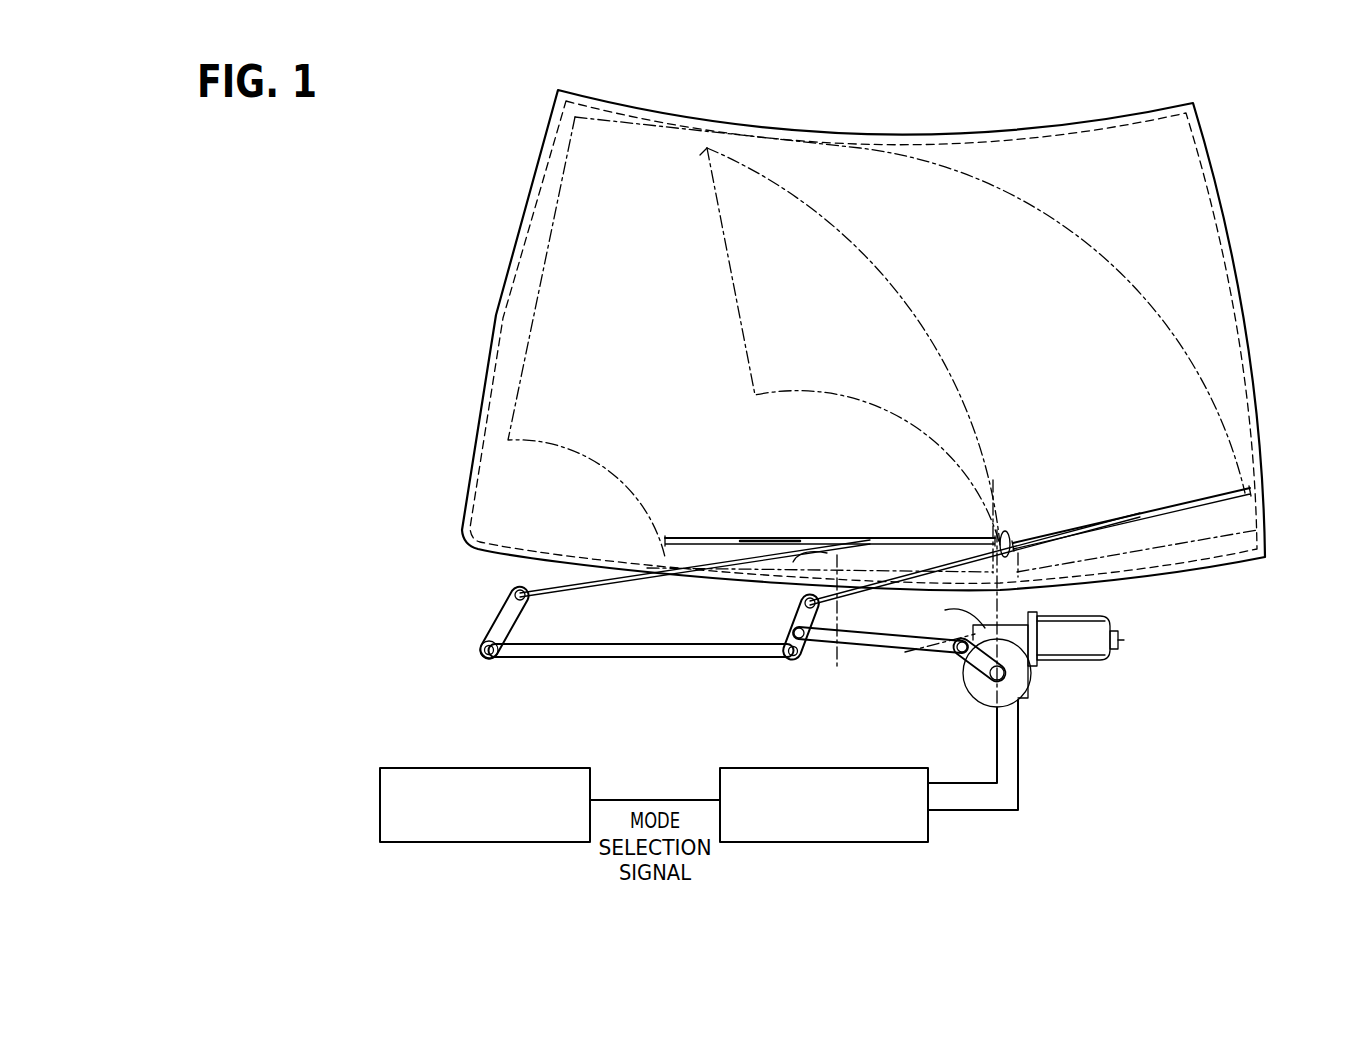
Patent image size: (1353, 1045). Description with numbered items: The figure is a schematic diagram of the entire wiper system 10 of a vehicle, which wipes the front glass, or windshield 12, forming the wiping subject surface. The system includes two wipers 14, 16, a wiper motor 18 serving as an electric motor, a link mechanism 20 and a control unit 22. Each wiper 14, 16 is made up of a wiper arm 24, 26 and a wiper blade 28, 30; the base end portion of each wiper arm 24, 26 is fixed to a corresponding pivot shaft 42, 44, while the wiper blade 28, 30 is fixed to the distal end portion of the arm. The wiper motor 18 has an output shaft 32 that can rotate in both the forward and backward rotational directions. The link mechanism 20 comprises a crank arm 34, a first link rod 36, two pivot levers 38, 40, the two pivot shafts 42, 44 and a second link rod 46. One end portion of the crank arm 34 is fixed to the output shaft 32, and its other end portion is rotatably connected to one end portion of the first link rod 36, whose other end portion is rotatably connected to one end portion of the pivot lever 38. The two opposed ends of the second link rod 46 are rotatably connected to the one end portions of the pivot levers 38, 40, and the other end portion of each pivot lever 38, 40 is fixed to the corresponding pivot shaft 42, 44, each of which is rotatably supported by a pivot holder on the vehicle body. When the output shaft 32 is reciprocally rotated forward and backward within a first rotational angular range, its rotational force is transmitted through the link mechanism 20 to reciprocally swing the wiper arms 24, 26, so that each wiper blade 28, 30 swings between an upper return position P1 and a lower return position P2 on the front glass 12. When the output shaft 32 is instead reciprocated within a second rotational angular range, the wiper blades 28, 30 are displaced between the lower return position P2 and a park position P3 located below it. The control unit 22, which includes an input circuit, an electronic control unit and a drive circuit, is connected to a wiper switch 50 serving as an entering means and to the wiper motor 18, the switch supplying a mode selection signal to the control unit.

The wiper system 10 is at (1066, 813).
The windshield 12 is at (903, 135).
The wiper 14 is at (1188, 501).
The wiper 16 is at (925, 538).
The wiper motor 18 is at (1122, 640).
The link mechanism 20 is at (756, 668).
The control unit 22 is at (858, 843).
The wiper arm 24 is at (1003, 530).
The wiper arm 26 is at (735, 555).
The wiper blade 28 is at (1063, 535).
The wiper blade 30 is at (770, 538).
The output shaft 32 is at (1030, 690).
The crank arm 34 is at (980, 708).
The first link rod 36 is at (890, 655).
The pivot lever 38 is at (790, 632).
The pivot lever 40 is at (503, 622).
The pivot shaft 42 is at (795, 606).
The pivot shaft 44 is at (517, 592).
The second link rod 46 is at (655, 658).
The wiper switch 50 is at (380, 800).
The upper return position P1 is at (540, 292).
The lower return position P2 is at (885, 557).
The park position P3 is at (1198, 537).